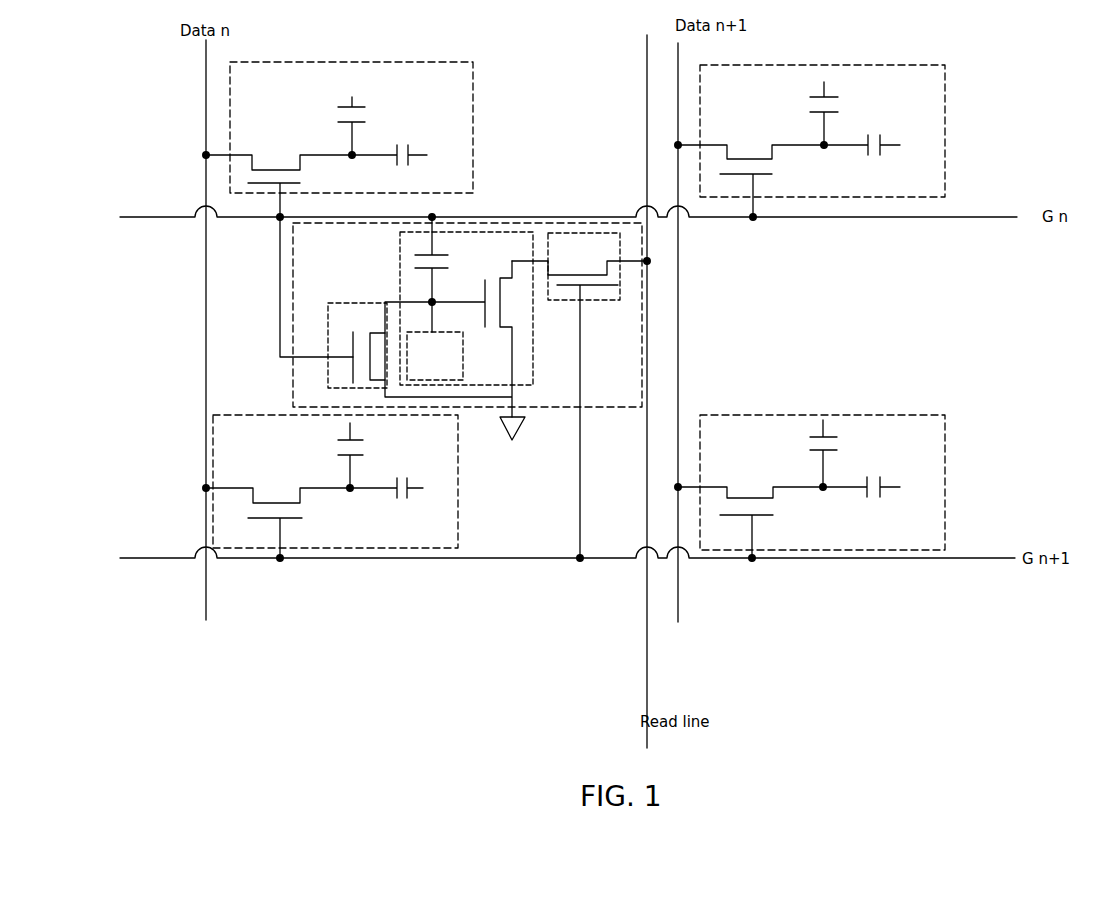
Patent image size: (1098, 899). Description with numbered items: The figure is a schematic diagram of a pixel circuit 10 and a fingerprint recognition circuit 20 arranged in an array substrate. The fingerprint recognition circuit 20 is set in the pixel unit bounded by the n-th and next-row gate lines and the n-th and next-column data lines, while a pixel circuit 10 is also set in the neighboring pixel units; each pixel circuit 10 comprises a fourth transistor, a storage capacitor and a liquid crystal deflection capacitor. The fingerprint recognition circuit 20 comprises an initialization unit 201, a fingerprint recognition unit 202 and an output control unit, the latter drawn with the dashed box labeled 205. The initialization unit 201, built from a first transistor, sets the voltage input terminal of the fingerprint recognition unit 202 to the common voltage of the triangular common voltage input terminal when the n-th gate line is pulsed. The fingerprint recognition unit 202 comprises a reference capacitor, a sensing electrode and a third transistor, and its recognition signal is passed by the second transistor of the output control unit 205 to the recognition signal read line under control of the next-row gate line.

The pixel circuit 10 is at (405, 82).
The fingerprint recognition circuit 20 is at (397, 388).
The initialization unit 201 is at (343, 318).
The fingerprint recognition unit 202 is at (523, 353).
The readout sub-circuit 205 is at (590, 298).